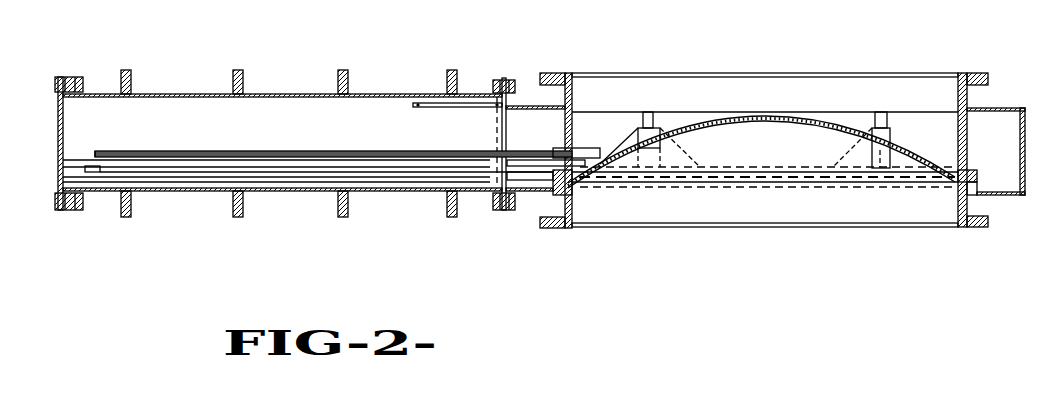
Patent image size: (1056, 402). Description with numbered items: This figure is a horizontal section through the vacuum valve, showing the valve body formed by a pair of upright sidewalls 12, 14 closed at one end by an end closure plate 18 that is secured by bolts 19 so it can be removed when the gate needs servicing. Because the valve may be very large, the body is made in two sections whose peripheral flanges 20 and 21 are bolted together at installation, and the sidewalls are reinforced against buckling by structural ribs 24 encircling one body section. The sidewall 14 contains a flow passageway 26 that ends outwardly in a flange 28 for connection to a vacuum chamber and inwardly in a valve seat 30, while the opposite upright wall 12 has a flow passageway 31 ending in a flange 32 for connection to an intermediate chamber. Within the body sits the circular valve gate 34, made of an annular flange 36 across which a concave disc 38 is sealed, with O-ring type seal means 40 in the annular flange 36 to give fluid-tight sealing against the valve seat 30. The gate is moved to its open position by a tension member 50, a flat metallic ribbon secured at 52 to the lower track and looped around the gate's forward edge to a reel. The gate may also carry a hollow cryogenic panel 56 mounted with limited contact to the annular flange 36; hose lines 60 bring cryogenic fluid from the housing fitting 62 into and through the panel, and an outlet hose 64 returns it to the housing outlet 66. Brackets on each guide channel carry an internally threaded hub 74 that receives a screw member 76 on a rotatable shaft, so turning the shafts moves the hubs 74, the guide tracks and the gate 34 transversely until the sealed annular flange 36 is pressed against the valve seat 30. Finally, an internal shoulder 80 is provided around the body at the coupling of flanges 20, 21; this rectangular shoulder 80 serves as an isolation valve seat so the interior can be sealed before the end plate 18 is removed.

The upright sidewall 12 is at (272, 96).
The upright sidewall 14 is at (279, 193).
The end closure plate 18 is at (60, 128).
The bolts 19 is at (80, 78).
The peripheral flange 20 is at (505, 80).
The peripheral flange 21 is at (498, 96).
The structural ribs 24 is at (238, 72).
The flow passageway 26 is at (573, 216).
The flange 28 is at (553, 228).
The valve seat 30 is at (573, 185).
The flow passageway 31 is at (572, 95).
The flange 32 is at (558, 78).
The valve gate 34 is at (841, 124).
The annular flange 36 is at (956, 181).
The concave disc 38 is at (741, 124).
The seal means 40 is at (977, 184).
The tension member 50 is at (182, 173).
The securing point 52 is at (92, 175).
The cryogenic panel 56 is at (792, 188).
The hose lines 60 is at (267, 158).
The fitting 62 is at (97, 158).
The outlet hose 64 is at (320, 153).
The housing outlet 66 is at (92, 156).
The internally threaded hub 74 is at (650, 141).
The screw member 76 is at (653, 117).
The internal shoulder 80 is at (495, 183).